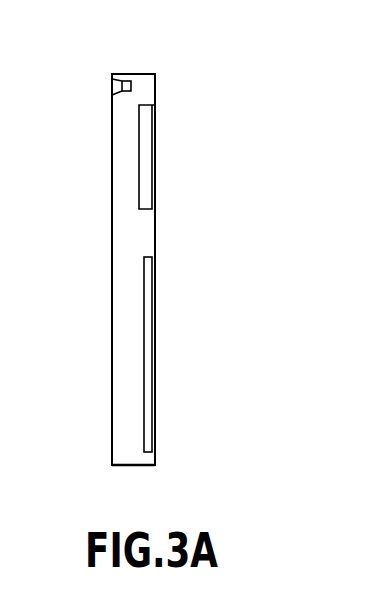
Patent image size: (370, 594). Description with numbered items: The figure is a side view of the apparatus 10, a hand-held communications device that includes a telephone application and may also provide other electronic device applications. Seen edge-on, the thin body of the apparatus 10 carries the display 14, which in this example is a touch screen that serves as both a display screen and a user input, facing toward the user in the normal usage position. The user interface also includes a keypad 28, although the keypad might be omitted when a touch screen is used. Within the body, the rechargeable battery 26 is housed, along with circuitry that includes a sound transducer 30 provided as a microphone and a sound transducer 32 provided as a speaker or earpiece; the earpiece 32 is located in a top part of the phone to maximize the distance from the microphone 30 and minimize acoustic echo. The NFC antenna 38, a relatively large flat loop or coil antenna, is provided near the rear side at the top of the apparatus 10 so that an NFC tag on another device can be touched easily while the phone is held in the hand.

The apparatus 10 is at (237, 70).
The display 14 is at (111, 180).
The rechargeable battery 26 is at (156, 363).
The keypad 28 is at (111, 365).
The sound transducer 30 is at (133, 466).
The sound transducer 32 is at (111, 93).
The NFC antenna 38 is at (156, 192).